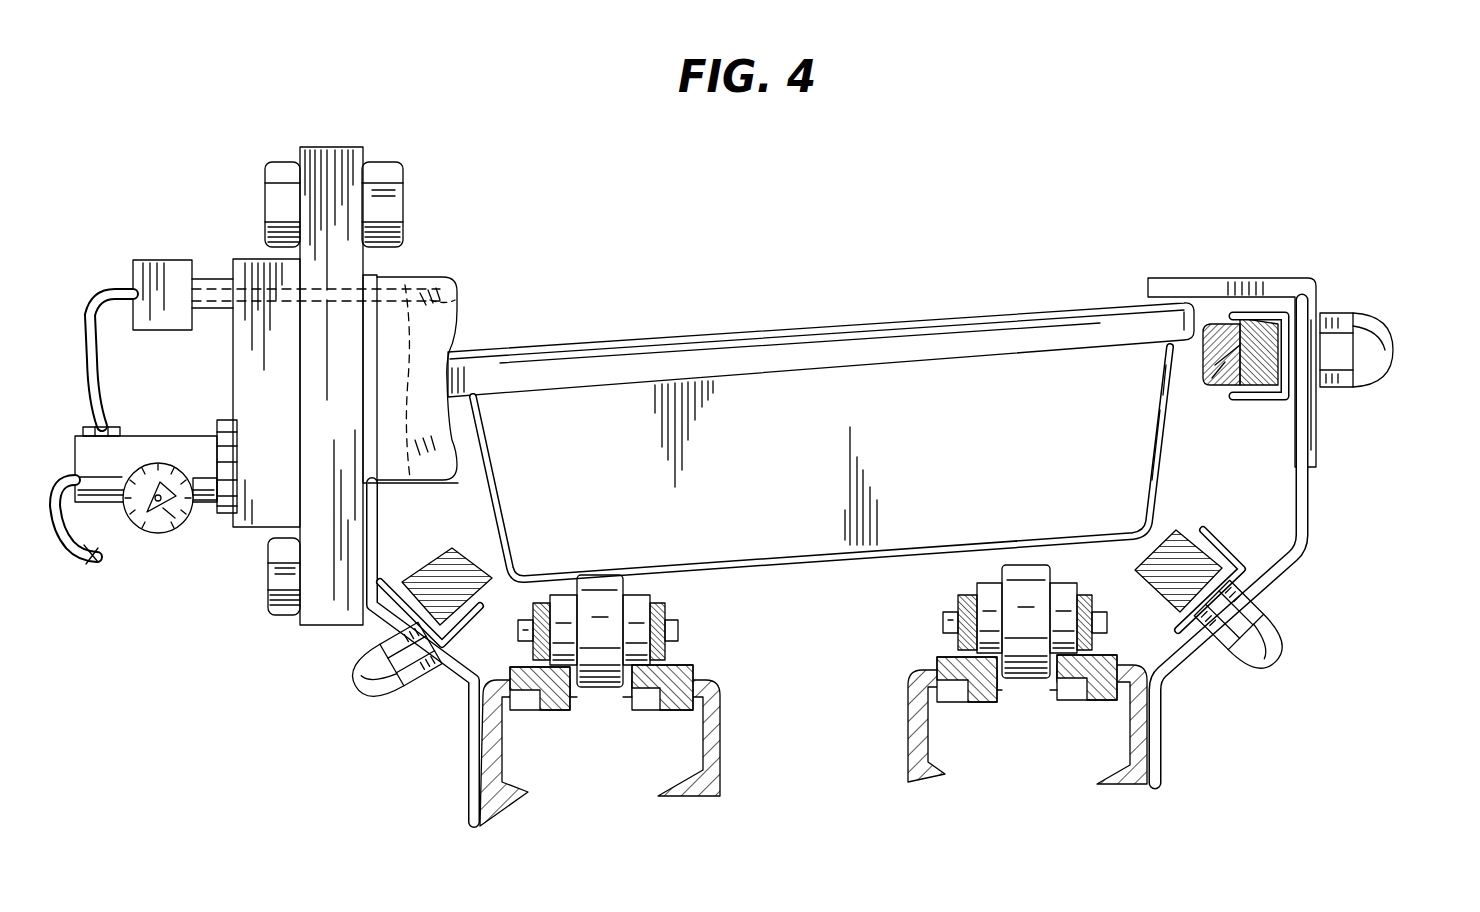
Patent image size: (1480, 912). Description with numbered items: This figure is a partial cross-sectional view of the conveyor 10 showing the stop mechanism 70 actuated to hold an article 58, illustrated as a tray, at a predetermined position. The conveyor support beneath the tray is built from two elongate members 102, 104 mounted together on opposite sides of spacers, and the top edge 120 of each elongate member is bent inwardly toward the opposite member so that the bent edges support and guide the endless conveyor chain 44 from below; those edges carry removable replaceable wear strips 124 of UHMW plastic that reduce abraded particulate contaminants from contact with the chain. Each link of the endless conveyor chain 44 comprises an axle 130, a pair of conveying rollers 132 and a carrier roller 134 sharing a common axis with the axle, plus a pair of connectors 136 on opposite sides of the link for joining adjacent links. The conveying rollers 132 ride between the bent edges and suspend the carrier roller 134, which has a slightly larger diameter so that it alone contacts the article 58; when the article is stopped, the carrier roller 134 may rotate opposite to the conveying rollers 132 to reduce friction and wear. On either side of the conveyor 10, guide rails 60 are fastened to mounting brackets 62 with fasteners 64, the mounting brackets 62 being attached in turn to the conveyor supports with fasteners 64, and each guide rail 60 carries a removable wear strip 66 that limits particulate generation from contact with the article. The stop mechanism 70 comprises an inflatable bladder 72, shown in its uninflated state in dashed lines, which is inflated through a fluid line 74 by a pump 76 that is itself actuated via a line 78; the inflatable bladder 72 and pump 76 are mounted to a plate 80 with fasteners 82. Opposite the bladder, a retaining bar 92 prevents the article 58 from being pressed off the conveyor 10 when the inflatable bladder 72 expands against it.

The conveyor 10 is at (1315, 543).
The endless conveyor chain 44 is at (678, 630).
The article 58 is at (720, 350).
The guide rail 60 is at (1265, 392).
The mounting bracket 62 is at (466, 702).
The fastener 64 is at (1395, 356).
The wear strip 66 is at (1212, 372).
The stop mechanism 70 is at (243, 240).
The inflatable bladder 72 is at (446, 300).
The fluid line 74 is at (106, 282).
The pump 76 is at (130, 452).
The line 78 is at (97, 527).
The plate 80 is at (318, 150).
The fastener 82 is at (272, 170).
The retaining bar 92 is at (1215, 286).
The elongate member 102 is at (722, 748).
The elongate member 104 is at (470, 785).
The top edge 120 is at (540, 710).
The wear strip 124 is at (633, 710).
The axle 130 is at (520, 630).
The conveying roller 132 is at (563, 590).
The carrier roller 134 is at (602, 580).
The connector 136 is at (536, 650).